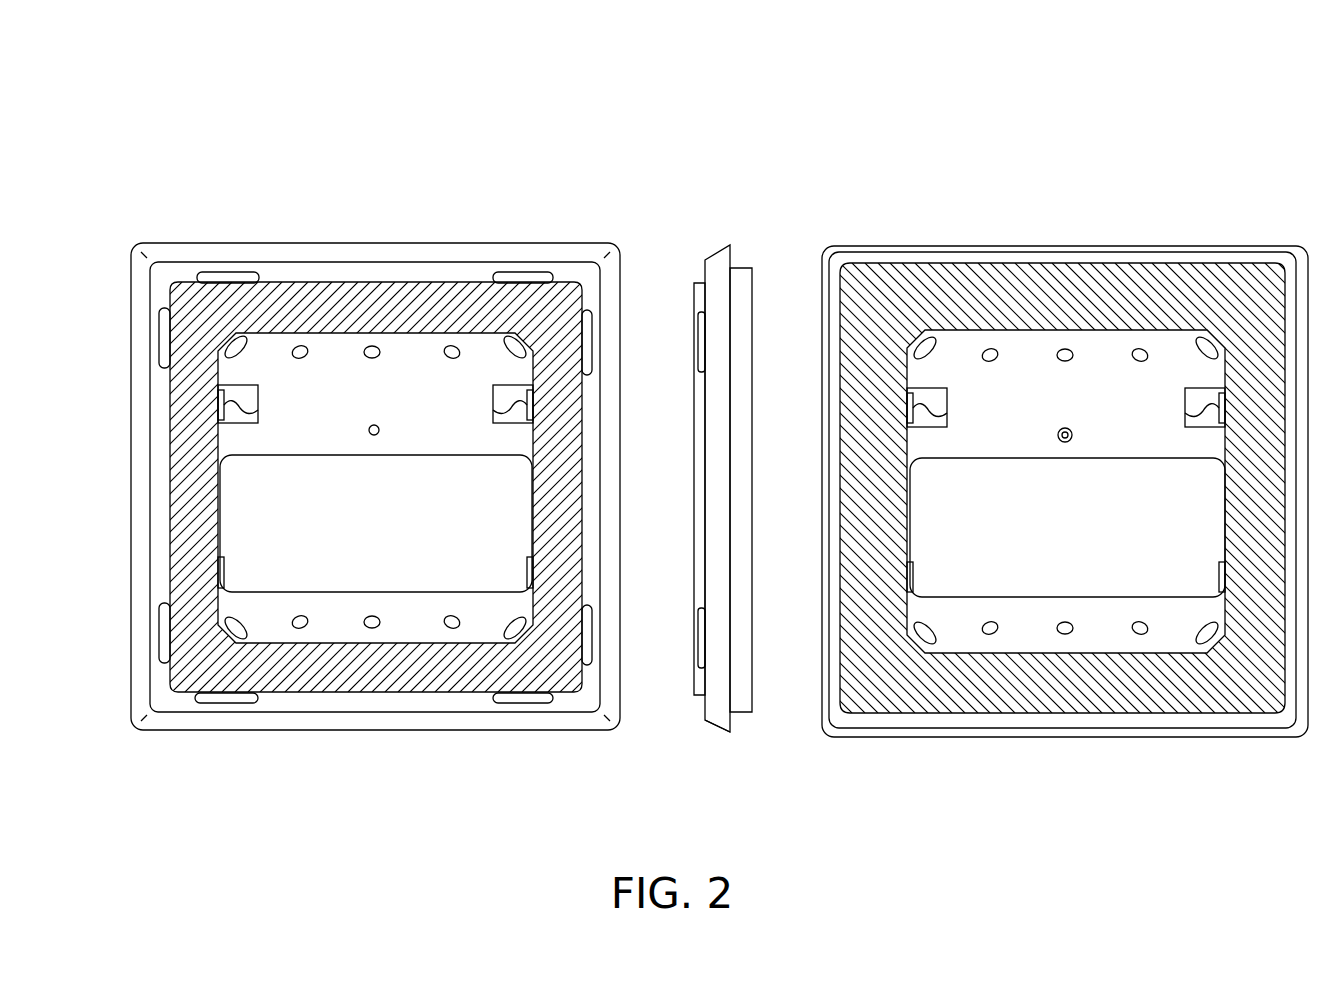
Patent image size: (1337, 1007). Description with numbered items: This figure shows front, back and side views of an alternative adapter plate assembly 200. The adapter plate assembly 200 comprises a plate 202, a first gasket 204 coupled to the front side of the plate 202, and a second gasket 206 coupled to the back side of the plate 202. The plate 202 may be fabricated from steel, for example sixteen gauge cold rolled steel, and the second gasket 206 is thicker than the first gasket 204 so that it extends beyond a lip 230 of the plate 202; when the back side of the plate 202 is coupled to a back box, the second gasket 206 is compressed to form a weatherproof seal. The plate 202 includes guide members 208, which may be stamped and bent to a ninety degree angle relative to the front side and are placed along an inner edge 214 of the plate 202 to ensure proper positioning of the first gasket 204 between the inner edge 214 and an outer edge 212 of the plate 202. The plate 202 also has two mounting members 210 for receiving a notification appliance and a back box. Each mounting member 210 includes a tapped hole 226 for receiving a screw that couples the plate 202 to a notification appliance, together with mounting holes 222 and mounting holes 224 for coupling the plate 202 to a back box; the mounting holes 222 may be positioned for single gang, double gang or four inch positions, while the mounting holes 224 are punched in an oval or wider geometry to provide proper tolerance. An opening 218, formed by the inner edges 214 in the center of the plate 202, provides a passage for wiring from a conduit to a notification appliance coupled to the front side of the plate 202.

The adapter plate assembly 200 is at (1246, 66).
The plate 202 is at (727, 245).
The first gasket 204 is at (693, 281).
The second gasket 206 is at (749, 266).
The guide members 208 is at (232, 272).
The mounting member 210 is at (417, 630).
The outer edge 212 is at (338, 241).
The inner edge 214 is at (965, 458).
The opening 218 is at (350, 531).
The mounting hole 222 is at (446, 360).
The mounting hole 224 is at (225, 340).
The tapped hole 226 is at (377, 437).
The lip 230 is at (712, 722).